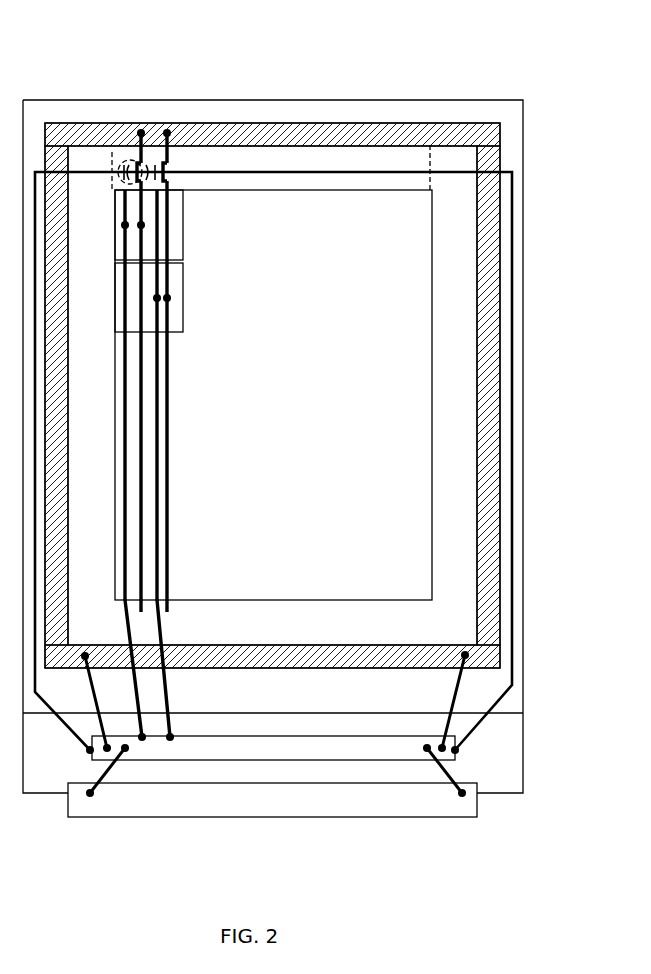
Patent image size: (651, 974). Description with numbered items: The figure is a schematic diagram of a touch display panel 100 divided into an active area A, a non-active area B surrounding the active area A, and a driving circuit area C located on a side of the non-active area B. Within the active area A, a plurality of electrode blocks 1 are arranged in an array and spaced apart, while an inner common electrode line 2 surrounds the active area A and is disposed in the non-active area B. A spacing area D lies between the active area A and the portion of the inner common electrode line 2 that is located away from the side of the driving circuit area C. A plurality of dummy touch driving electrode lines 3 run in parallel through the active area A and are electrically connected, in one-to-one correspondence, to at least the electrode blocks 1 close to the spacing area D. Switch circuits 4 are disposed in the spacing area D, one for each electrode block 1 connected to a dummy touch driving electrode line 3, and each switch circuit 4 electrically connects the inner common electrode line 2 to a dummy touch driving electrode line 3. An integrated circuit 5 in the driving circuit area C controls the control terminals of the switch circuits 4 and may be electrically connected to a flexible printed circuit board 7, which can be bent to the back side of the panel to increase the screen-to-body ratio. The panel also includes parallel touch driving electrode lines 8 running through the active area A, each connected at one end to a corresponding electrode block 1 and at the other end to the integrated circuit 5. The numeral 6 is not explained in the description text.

The touch display panel 100 is at (56, 30).
The electrode blocks 1 is at (175, 237).
The inner common electrode line 2 is at (398, 124).
The dummy touch driving electrode lines 3 is at (140, 160).
The switch circuits 4 is at (118, 163).
The integrated circuit 5 is at (338, 743).
The array substrate frame 6 is at (512, 432).
The flexible printed circuit board 7 is at (247, 798).
The touch driving electrode lines 8 is at (157, 323).
The active area A is at (432, 420).
The non-active area B is at (512, 705).
The driving circuit area C is at (505, 773).
The spacing area D is at (430, 172).